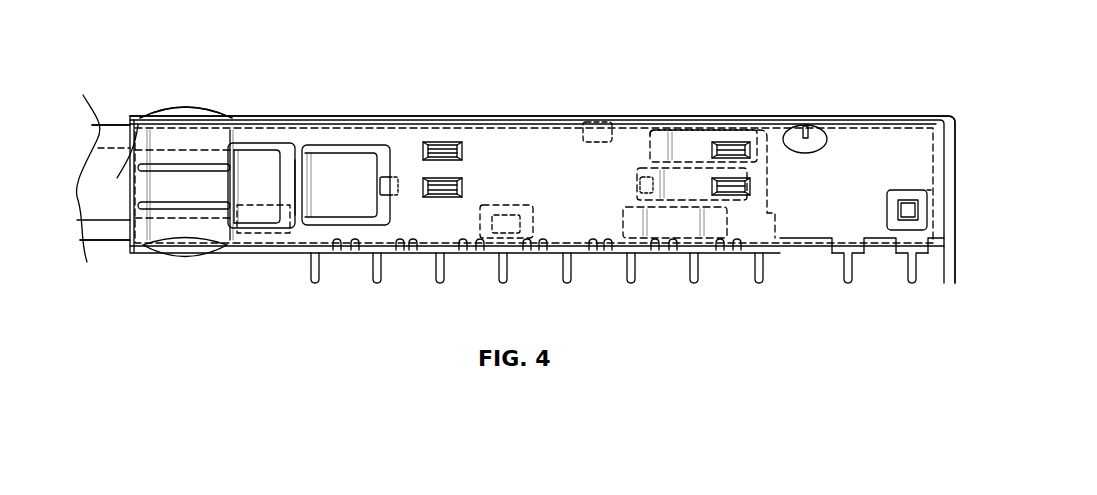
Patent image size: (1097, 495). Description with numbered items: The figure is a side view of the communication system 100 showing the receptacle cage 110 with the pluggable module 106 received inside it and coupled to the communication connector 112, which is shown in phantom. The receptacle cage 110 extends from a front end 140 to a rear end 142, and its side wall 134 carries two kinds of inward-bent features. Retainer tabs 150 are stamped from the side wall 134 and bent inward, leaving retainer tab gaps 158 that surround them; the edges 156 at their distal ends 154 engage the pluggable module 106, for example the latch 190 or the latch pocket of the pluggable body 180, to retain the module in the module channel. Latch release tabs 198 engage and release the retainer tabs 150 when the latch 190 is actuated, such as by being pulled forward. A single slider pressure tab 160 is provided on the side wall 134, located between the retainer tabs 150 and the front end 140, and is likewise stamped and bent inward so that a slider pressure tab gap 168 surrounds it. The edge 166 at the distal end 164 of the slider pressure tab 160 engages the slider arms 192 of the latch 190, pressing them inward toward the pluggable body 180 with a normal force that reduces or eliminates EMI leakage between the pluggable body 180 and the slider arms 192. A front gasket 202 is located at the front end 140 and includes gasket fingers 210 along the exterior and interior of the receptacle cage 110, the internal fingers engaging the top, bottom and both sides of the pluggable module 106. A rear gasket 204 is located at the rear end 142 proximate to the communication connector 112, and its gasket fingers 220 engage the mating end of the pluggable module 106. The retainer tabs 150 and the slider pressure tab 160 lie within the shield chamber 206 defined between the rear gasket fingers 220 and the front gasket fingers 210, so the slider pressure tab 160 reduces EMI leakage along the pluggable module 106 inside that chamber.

The communication system 100 is at (780, 88).
The pluggable module 106 is at (105, 238).
The receptacle cage 110 is at (588, 127).
The communication connector 112 is at (867, 122).
The side wall 134 is at (628, 152).
The front end 140 is at (125, 118).
The rear end 142 is at (958, 129).
The retainer tab 150 is at (340, 193).
The distal end 154 is at (392, 208).
The edge 156 is at (380, 160).
The retainer tab gap 158 is at (355, 147).
The slider pressure tab 160 is at (255, 183).
The distal end 164 is at (296, 205).
The edge 166 is at (283, 160).
The slider pressure tab gap 168 is at (262, 141).
The pluggable body 180 is at (105, 140).
The latch 190 is at (117, 226).
The slider arm 192 is at (143, 127).
The latch release tab 198 is at (395, 178).
The front gasket 202 is at (195, 96).
The rear gasket 204 is at (694, 151).
The shield chamber 206 is at (516, 126).
The gasket finger 210 is at (210, 122).
The gasket finger 220 is at (735, 133).